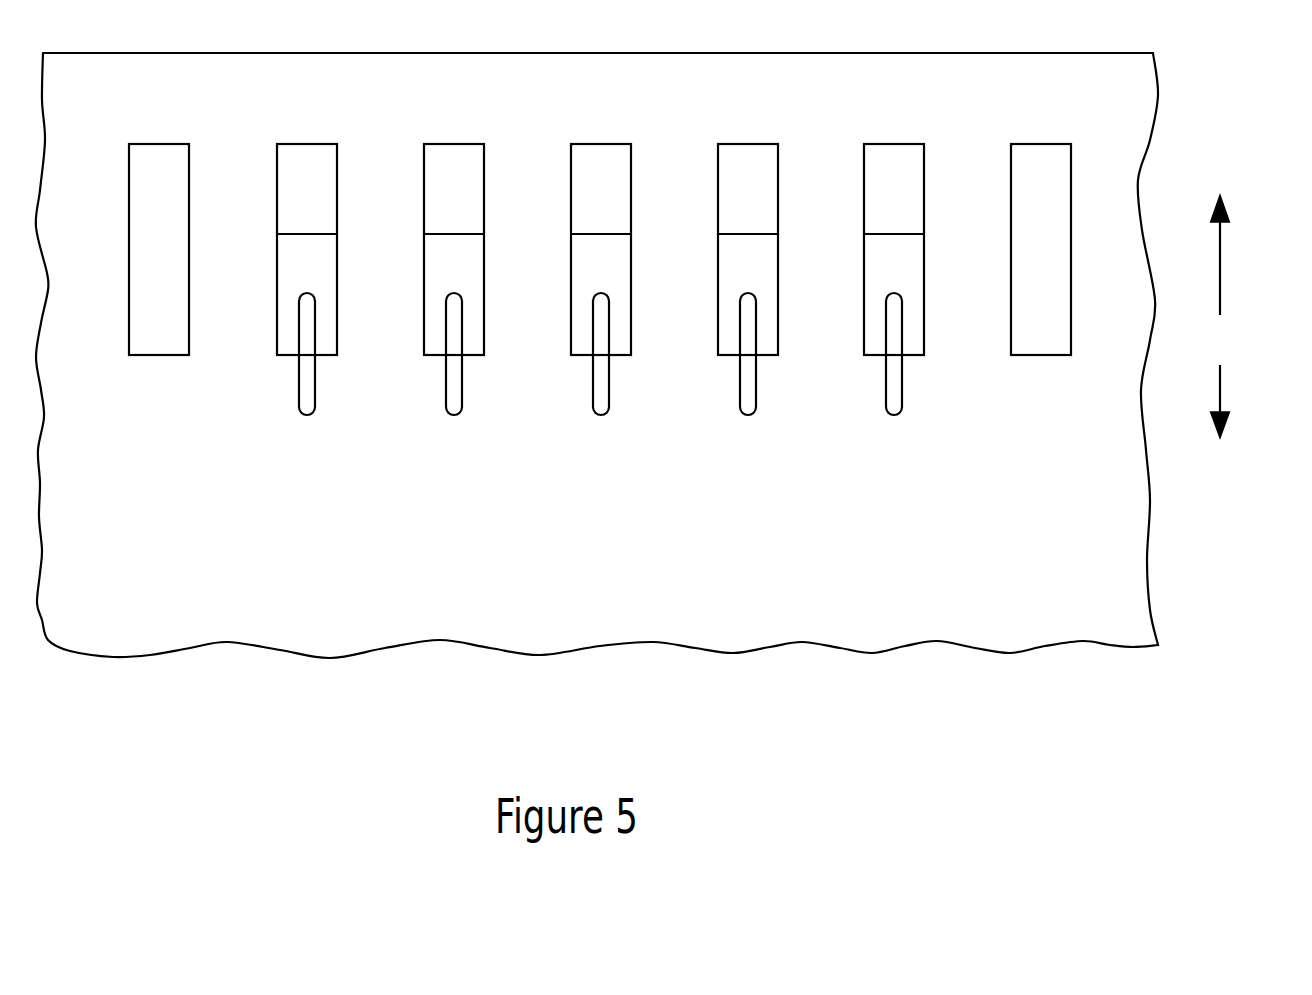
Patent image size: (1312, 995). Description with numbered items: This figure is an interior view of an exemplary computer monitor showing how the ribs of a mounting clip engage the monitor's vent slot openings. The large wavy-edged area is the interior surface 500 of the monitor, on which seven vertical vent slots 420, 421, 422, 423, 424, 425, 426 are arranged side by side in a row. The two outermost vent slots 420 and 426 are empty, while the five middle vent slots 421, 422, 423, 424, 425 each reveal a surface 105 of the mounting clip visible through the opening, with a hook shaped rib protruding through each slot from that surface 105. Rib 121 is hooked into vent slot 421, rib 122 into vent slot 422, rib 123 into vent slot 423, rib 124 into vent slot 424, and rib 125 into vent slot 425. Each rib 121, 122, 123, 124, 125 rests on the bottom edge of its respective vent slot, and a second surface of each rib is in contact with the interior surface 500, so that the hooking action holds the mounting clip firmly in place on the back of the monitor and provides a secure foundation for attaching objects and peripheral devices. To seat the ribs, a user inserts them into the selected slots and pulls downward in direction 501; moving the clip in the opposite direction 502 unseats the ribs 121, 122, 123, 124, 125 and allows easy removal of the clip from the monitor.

The interior surface 500 is at (582, 613).
The direction 501 is at (1220, 378).
The direction 502 is at (1220, 251).
The surface 105 is at (294, 264).
The vent slot 420 is at (1046, 143).
The vent slot 421 is at (899, 143).
The vent slot 422 is at (753, 143).
The vent slot 423 is at (606, 143).
The vent slot 424 is at (459, 143).
The vent slot 425 is at (312, 143).
The vent slot 426 is at (164, 143).
The rib 121 is at (885, 402).
The rib 122 is at (739, 402).
The rib 123 is at (592, 402).
The rib 124 is at (445, 402).
The rib 125 is at (298, 402).